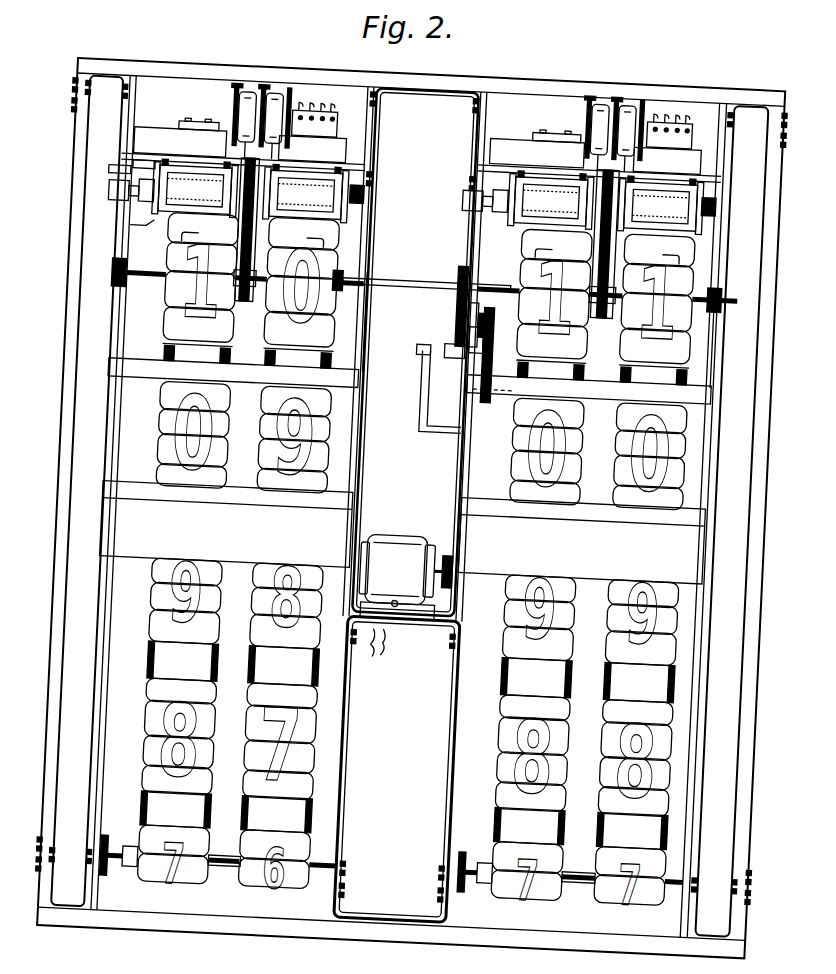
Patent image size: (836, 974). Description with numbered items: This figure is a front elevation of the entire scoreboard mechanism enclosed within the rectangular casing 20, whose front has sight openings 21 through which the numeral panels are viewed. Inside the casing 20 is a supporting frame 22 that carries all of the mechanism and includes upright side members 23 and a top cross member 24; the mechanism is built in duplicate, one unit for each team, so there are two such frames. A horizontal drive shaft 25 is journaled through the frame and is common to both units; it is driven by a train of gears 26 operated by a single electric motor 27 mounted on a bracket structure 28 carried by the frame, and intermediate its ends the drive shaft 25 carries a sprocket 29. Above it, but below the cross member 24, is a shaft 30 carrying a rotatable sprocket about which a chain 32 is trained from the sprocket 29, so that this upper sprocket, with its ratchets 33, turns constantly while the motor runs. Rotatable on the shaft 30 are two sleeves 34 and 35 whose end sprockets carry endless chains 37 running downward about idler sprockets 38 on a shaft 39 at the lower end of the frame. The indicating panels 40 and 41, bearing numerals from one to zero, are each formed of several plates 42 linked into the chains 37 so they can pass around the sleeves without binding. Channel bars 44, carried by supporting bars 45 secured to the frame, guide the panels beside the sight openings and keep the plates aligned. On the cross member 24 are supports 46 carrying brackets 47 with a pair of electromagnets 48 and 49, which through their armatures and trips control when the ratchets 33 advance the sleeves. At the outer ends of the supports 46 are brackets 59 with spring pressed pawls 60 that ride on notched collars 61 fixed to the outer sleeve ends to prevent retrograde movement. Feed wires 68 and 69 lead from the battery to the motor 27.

The casing 20 is at (706, 192).
The sight openings 21 is at (733, 521).
The supporting frame 22 is at (411, 354).
The upright side members 23 is at (554, 360).
The top cross member 24 is at (421, 155).
The horizontal drive shaft 25 is at (422, 273).
The train of gears 26 is at (467, 350).
The electric motor 27 is at (406, 568).
The bracket structure 28 is at (397, 769).
The sprocket 29 is at (426, 251).
The shaft 30 is at (412, 208).
The chain 32 is at (424, 283).
The ratchets 33 is at (430, 239).
The sleeve 34 is at (373, 194).
The sleeve 35 is at (483, 199).
The endless chains 37 is at (426, 356).
The idler sprockets 38 is at (198, 816).
The shaft 39 is at (402, 854).
The panels 40 is at (100, 226).
The panels 41 is at (270, 216).
The plates 42 is at (100, 262).
The channel bars 44 is at (455, 320).
The supporting bars 45 is at (409, 395).
The supports 46 is at (443, 147).
The brackets 47 is at (381, 117).
The electromagnet 48 is at (419, 109).
The electromagnet 49 is at (471, 111).
The brackets 59 is at (148, 137).
The spring pressed pawls 60 is at (110, 176).
The collars 61 is at (124, 234).
The feed wire 68 is at (341, 643).
The feed wire 69 is at (381, 649).